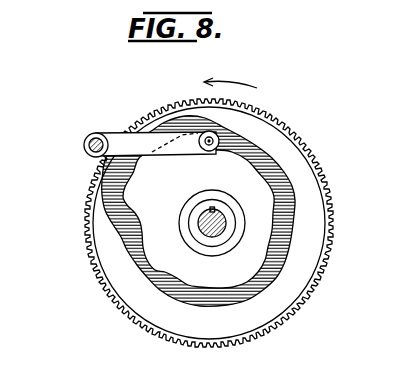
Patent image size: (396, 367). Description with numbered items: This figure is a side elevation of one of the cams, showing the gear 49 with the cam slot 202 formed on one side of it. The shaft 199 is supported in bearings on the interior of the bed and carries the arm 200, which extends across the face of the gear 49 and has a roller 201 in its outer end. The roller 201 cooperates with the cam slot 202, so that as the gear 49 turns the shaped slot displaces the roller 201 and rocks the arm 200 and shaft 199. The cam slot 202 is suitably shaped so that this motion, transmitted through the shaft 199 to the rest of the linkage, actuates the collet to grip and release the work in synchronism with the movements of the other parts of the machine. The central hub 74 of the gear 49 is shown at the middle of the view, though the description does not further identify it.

The gear 49 is at (306, 147).
The shaft 74 is at (200, 222).
The shaft 199 is at (84, 145).
The arm 200 is at (149, 134).
The roller 201 is at (218, 137).
The cam slot 202 is at (291, 248).